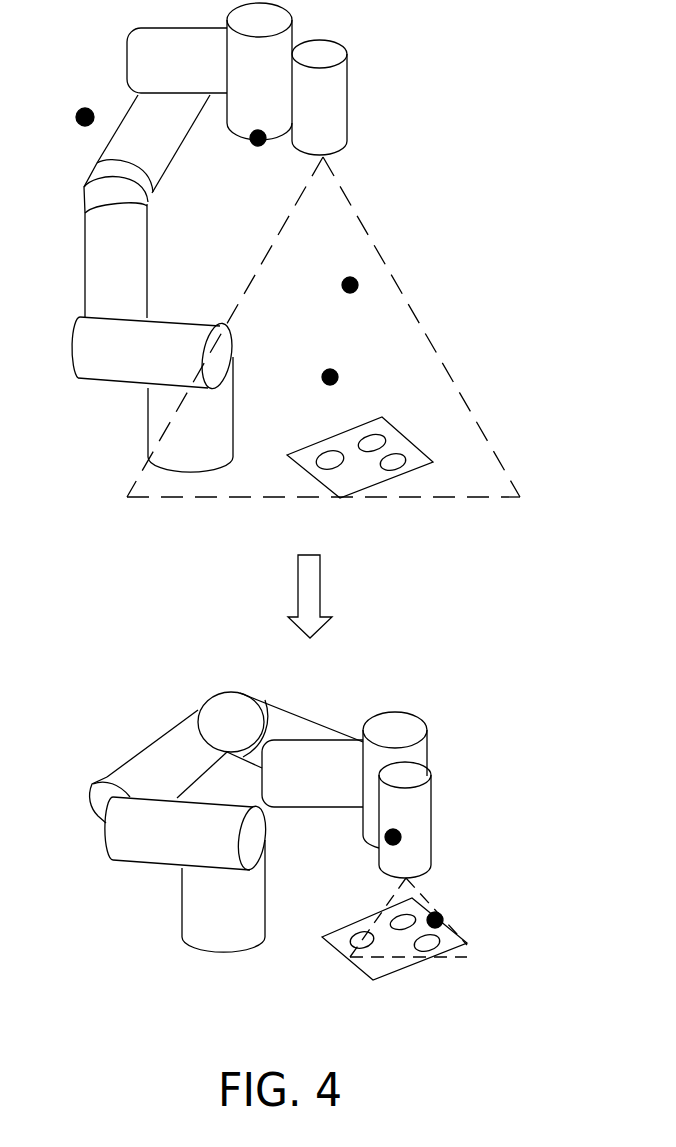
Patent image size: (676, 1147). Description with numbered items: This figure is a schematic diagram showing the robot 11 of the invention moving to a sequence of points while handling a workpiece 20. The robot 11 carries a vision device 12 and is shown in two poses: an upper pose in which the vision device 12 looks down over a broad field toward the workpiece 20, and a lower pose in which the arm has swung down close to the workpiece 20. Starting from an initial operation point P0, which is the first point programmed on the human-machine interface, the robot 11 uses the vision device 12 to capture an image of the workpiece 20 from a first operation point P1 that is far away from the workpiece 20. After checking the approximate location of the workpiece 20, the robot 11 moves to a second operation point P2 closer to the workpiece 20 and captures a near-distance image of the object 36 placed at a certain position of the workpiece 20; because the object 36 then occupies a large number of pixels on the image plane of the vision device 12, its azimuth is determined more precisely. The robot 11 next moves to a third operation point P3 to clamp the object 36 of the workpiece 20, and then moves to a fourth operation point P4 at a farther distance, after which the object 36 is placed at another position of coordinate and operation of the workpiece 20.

The robot 11 is at (85, 242).
The vision device 12 is at (347, 92).
The workpiece 20 is at (385, 481).
The object 36 is at (398, 455).
The initial operation point P0 is at (68, 116).
The first operation point P1 is at (262, 156).
The second operation point P2 is at (344, 609).
The third operation point P3 is at (454, 910).
The fourth operation point P4 is at (332, 284).